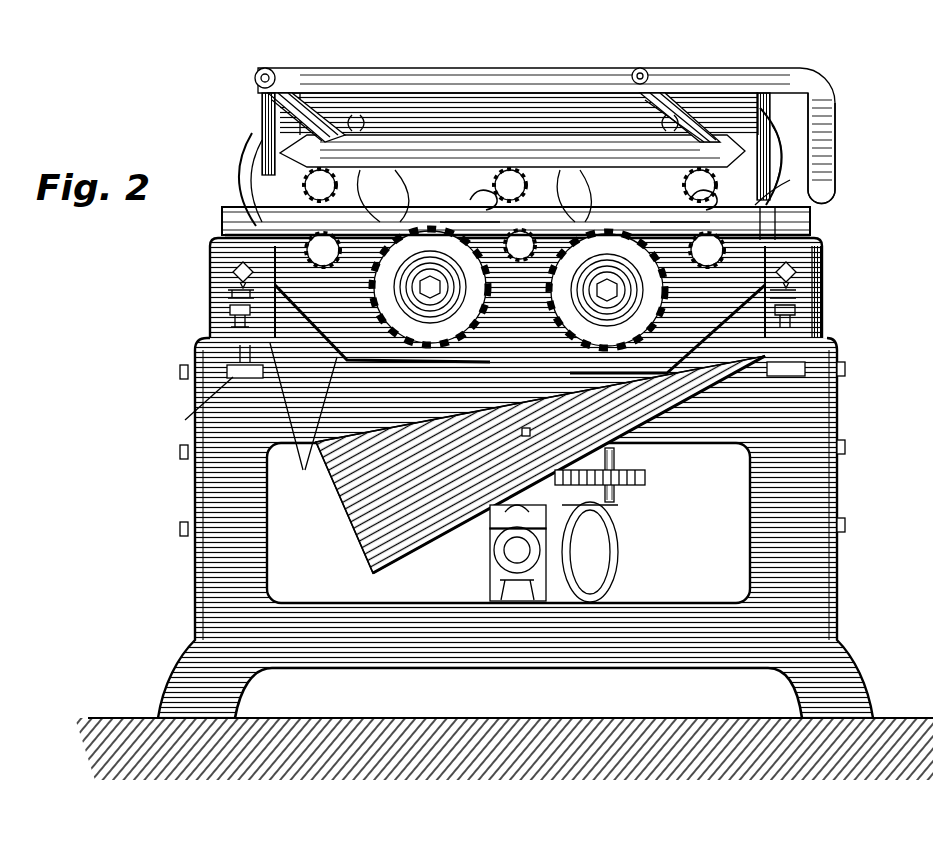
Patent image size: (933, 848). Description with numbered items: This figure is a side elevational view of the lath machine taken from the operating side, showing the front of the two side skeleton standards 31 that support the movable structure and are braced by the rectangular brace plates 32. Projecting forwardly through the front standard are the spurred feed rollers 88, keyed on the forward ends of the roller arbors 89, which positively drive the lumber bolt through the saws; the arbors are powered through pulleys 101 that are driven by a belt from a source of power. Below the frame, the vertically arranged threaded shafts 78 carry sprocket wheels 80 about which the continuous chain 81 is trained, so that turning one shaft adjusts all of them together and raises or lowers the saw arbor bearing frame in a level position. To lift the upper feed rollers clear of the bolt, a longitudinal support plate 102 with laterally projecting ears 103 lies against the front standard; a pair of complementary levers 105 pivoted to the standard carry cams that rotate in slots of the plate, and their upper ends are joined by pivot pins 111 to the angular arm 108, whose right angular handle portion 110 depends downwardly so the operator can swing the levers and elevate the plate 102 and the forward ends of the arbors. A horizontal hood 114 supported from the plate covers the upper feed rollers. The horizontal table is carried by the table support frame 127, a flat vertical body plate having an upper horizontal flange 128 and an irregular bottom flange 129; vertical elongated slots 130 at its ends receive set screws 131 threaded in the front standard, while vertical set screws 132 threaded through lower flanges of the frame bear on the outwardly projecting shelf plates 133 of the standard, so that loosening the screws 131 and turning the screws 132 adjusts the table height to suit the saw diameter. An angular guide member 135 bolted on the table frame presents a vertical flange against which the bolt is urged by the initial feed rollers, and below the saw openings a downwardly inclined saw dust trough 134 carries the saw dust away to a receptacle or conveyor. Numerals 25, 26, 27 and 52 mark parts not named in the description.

The pulley 25 is at (613, 548).
The motor 26 is at (497, 554).
The cross bar 27 is at (805, 218).
The side skeleton standard 31 is at (800, 427).
The brace plate 32 is at (185, 392).
The frame side wall 52 is at (190, 490).
The vertically arranged shaft 78 is at (614, 462).
The sprocket wheel 80 is at (540, 242).
The continuous chain 81 is at (647, 480).
The feed roller 88 is at (482, 192).
The roller arbor 89 is at (690, 192).
The pulley 101 is at (238, 172).
The longitudinal support plate 102 is at (417, 110).
The laterally projecting ear 103 is at (553, 77).
The complementary lever 105 is at (290, 107).
The angular arm 108 is at (805, 80).
The handle portion 110 is at (815, 126).
The pivot pin 111 is at (650, 70).
The horizontal hood 114 is at (305, 160).
The table support frame 127 is at (797, 303).
The upper horizontal flange 128 is at (822, 258).
The irregular bottom flange 129 is at (303, 424).
The vertical elongated slot 130 is at (240, 300).
The set screw 131 is at (233, 273).
The vertical set screw 132 is at (220, 326).
The shelf plate 133 is at (185, 420).
The saw dust trough 134 is at (372, 527).
The angular guide member 135 is at (807, 367).